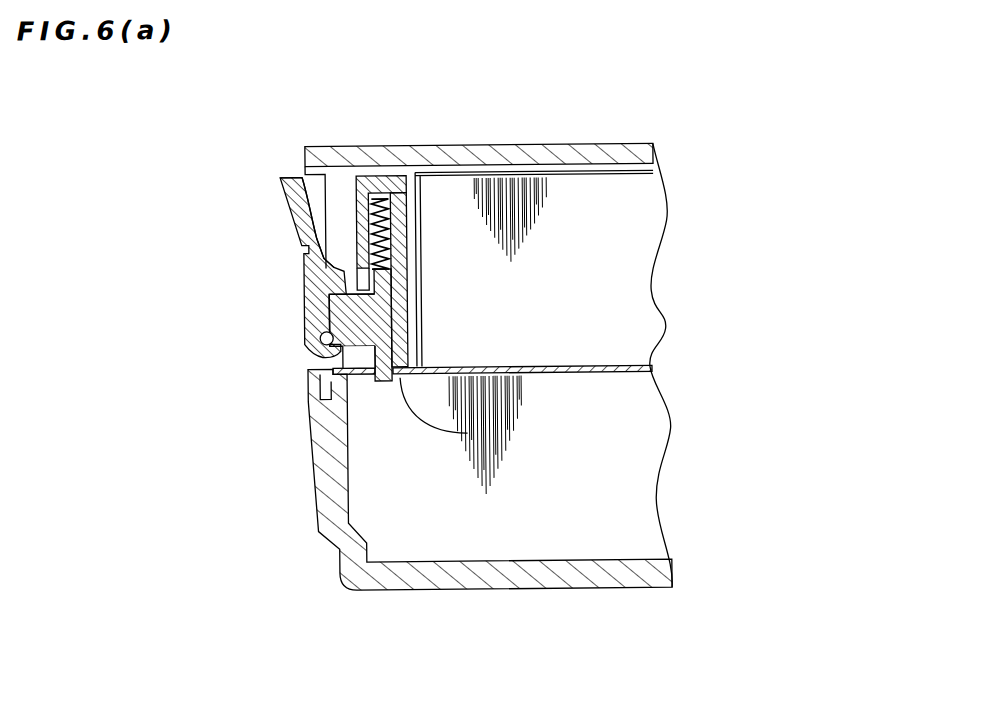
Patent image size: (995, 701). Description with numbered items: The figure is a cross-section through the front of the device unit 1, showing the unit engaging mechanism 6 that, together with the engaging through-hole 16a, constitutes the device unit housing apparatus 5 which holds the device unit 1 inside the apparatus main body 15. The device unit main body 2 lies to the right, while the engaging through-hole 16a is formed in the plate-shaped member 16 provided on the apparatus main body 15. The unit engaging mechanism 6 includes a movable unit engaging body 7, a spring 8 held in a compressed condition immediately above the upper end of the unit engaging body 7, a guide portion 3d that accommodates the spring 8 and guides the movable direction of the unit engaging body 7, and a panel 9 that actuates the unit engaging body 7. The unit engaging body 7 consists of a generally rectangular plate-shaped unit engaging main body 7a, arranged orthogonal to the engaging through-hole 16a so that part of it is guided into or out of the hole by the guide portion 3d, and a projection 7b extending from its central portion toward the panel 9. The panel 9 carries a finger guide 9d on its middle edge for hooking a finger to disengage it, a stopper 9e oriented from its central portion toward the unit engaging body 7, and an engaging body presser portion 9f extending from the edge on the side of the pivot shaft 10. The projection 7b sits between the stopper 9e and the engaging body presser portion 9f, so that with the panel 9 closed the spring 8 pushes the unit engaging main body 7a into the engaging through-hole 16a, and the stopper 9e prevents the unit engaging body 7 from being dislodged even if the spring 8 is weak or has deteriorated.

The device unit 1 is at (650, 93).
The device unit main body 2 is at (566, 229).
The guide portion 3d is at (386, 184).
The device unit housing apparatus 5 is at (733, 129).
The unit engaging mechanism 6 is at (410, 95).
The unit engaging body 7 is at (390, 378).
The unit engaging main body 7a is at (378, 318).
The projection 7b is at (330, 310).
The spring 8 is at (402, 242).
The panel 9 is at (305, 263).
The finger guide 9d is at (312, 182).
The stopper 9e is at (335, 263).
The engaging body presser portion 9f is at (330, 370).
The pivot shaft 10 is at (322, 340).
The apparatus main body 15 is at (413, 595).
The plate-shaped member 16 is at (636, 366).
The engaging through-hole 16a is at (460, 433).